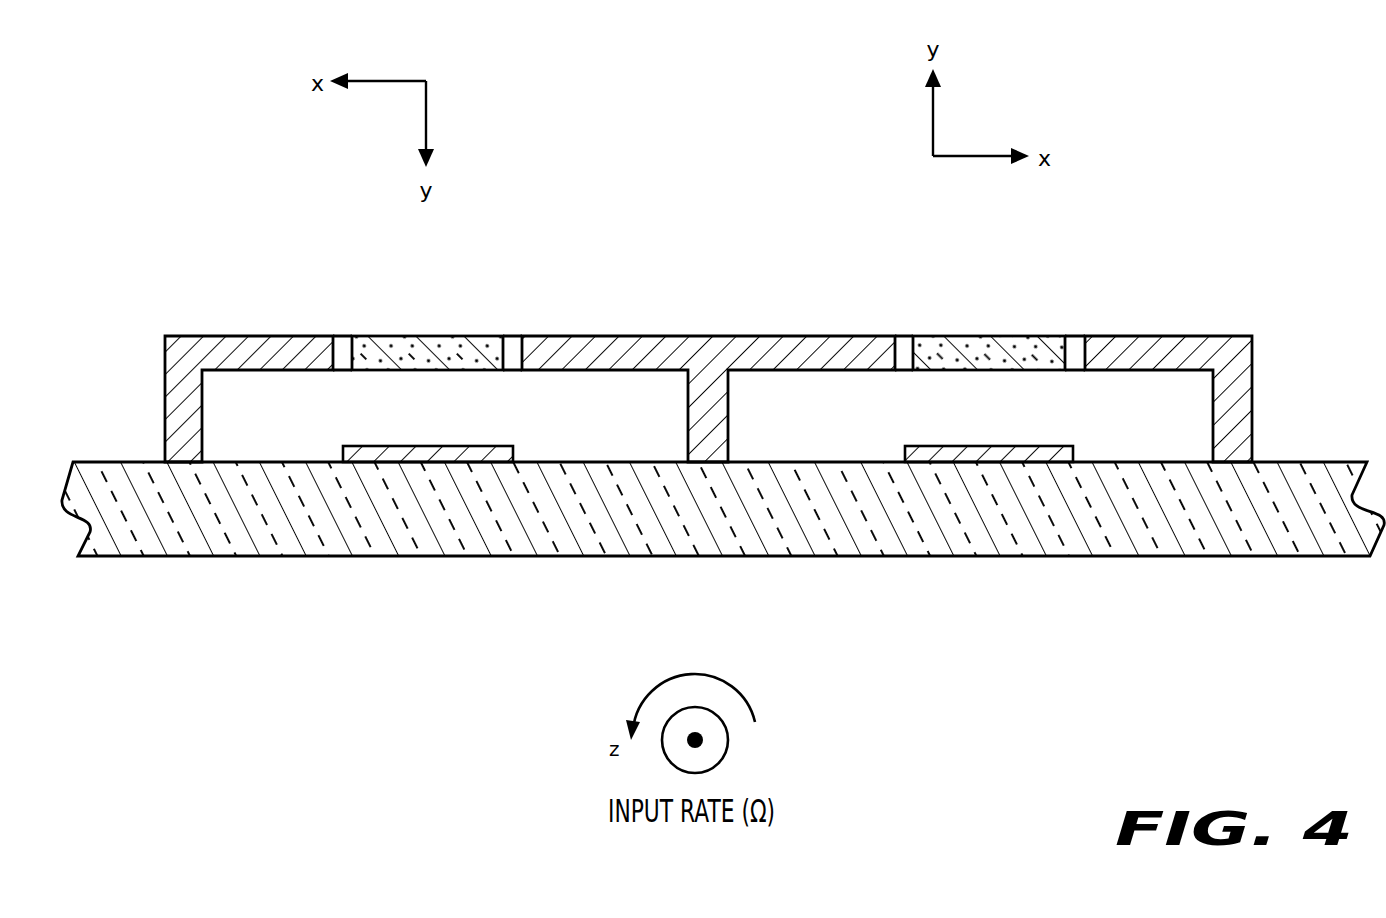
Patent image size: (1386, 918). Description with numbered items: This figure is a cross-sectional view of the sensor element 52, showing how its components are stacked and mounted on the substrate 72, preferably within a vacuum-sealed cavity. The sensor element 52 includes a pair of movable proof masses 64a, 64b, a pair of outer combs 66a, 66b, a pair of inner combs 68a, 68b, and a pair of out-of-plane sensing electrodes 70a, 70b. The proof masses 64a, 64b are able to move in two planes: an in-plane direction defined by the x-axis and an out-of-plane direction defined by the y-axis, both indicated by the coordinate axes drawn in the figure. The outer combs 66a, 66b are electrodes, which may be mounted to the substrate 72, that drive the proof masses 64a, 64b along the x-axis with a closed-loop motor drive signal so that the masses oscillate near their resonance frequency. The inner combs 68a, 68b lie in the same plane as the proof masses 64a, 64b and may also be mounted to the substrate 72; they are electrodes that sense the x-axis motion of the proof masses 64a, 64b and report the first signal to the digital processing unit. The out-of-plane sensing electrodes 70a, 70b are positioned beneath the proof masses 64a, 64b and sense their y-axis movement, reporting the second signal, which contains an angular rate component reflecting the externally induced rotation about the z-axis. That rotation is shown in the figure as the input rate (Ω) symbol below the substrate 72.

The sensor element 52 is at (740, 310).
The proof mass 64a is at (424, 336).
The proof mass 64b is at (989, 336).
The outer comb 66a is at (262, 336).
The outer comb 66b is at (1151, 336).
The inner comb 68a is at (568, 336).
The inner comb 68b is at (844, 336).
The out-of-plane sensing electrode 70a is at (360, 446).
The out-of-plane sensing electrode 70b is at (1065, 446).
The substrate 72 is at (1167, 547).